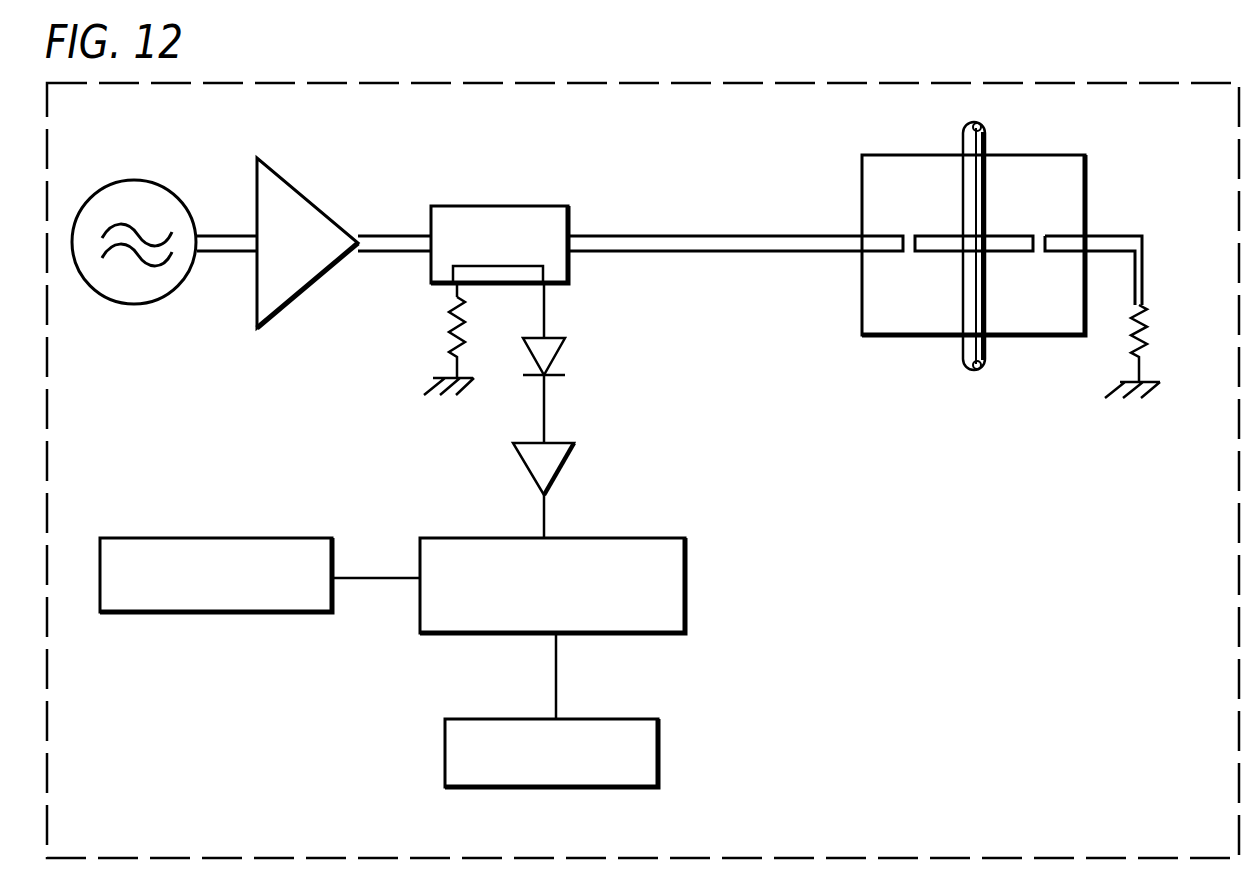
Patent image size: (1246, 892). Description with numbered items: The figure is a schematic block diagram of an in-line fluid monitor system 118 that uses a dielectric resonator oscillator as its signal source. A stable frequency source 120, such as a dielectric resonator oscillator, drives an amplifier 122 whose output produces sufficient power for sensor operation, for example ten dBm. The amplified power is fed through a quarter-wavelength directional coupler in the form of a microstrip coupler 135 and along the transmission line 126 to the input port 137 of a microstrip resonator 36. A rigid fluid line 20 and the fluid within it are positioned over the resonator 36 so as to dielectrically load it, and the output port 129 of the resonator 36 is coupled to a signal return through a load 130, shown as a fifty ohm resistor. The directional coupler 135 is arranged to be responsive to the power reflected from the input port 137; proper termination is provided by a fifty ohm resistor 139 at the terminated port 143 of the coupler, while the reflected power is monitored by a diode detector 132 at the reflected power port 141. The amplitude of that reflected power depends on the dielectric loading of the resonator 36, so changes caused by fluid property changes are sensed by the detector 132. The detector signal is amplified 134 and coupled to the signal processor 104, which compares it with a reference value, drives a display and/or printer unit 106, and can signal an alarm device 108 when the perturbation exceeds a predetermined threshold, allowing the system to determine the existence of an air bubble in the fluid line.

The in-line fluid monitor system 118 is at (1065, 83).
The stable frequency source 120 is at (118, 182).
The amplifier 122 is at (308, 200).
The microstrip coupler 135 is at (480, 206).
The transmission line 126 is at (618, 232).
The terminated port 143 is at (452, 283).
The fifty ohm resistor 139 is at (450, 320).
The reflected power port 141 is at (546, 284).
The diode detector 132 is at (560, 352).
The amplifier 134 is at (566, 468).
The signal processor 104 is at (462, 538).
The display and/or printer unit 106 is at (147, 538).
The alarm device 108 is at (492, 719).
The microstrip resonator 36 is at (890, 155).
The input port 137 is at (862, 236).
The fluid line 20 is at (985, 136).
The output port 129 is at (1088, 236).
The load 130 is at (1150, 328).